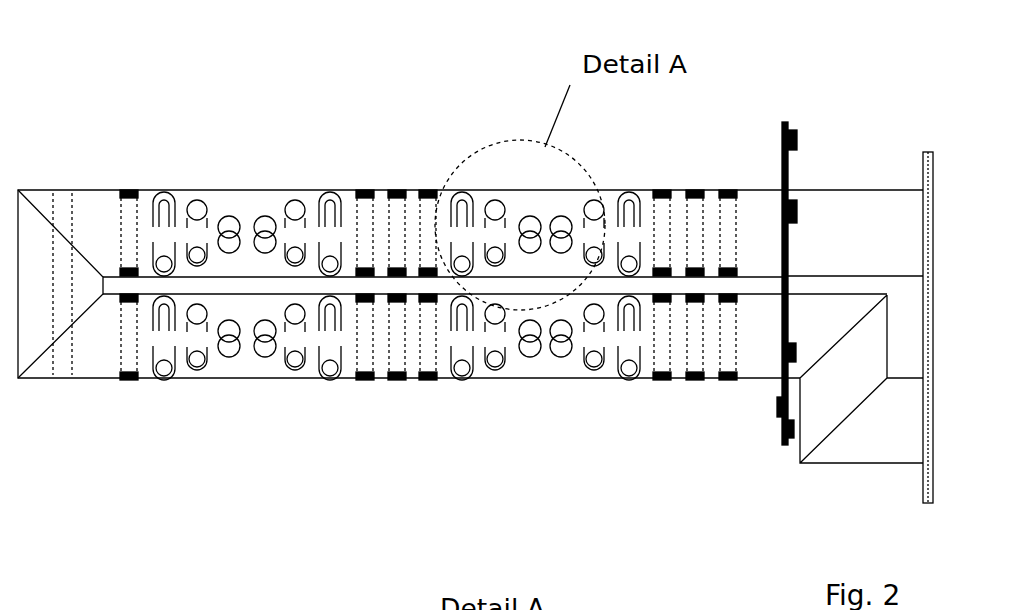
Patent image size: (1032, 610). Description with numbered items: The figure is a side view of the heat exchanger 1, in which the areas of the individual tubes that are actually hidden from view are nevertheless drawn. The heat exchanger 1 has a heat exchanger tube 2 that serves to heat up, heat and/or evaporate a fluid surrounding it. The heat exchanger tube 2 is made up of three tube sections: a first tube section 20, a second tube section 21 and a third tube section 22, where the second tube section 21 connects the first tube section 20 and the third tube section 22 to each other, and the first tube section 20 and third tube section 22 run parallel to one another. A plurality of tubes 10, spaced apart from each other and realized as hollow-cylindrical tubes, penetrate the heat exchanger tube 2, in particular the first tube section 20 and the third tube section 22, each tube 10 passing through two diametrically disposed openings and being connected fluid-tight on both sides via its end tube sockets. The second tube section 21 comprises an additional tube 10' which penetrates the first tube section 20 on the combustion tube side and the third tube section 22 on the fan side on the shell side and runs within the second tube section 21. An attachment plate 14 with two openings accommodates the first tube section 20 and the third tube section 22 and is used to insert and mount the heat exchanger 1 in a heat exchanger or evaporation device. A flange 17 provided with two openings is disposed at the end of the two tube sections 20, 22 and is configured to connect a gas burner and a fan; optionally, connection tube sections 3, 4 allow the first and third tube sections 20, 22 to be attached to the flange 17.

The heat exchanger 1 is at (288, 150).
The heat exchanger tube 2 is at (95, 210).
The connection tube section 3 is at (827, 210).
The connection tube section 4 is at (845, 358).
The tubes 10 is at (428, 358).
The additional tube 10' is at (78, 220).
The attachment plate 14 is at (792, 170).
The flange 17 is at (922, 172).
The first tube section 20 is at (758, 212).
The second tube section 21 is at (40, 313).
The third tube section 22 is at (757, 355).